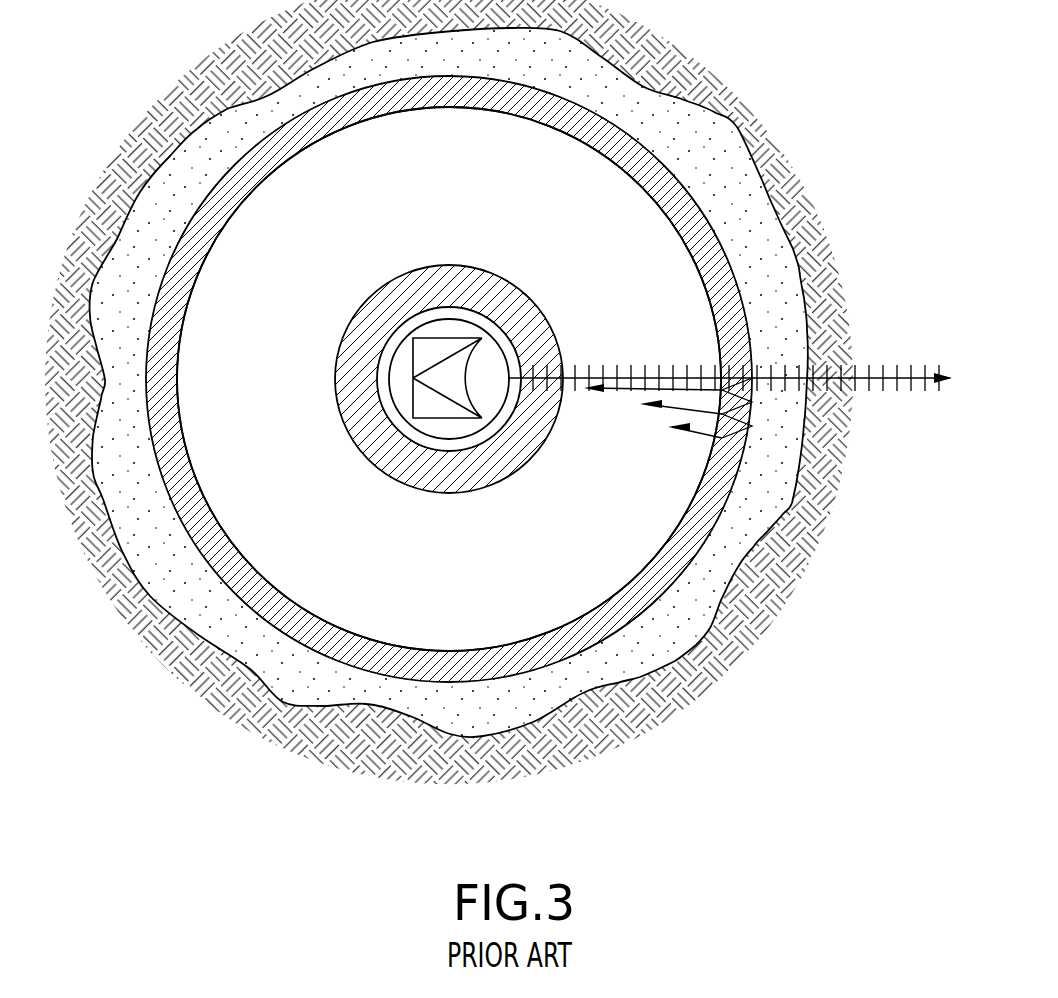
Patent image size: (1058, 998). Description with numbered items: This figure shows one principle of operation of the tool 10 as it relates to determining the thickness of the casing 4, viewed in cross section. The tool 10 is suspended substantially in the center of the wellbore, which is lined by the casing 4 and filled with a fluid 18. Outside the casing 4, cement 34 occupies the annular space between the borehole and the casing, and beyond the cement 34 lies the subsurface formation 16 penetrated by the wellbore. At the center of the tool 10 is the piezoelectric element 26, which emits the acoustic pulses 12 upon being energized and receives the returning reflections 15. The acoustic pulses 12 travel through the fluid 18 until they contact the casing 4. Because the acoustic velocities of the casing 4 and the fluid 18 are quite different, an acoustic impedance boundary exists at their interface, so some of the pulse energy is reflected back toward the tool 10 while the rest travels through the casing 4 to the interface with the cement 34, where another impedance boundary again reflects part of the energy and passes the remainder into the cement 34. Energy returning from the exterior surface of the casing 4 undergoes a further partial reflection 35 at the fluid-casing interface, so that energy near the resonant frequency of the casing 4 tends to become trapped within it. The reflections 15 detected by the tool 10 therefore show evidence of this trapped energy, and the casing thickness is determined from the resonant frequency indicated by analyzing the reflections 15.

The casing 4 is at (720, 285).
The tool 10 is at (456, 258).
The acoustic pulses 12 is at (645, 369).
The reflections 15 is at (645, 405).
The subsurface formation 16 is at (863, 639).
The fluid 18 is at (463, 577).
The piezoelectric element 26 is at (430, 348).
The cement 34 is at (787, 326).
The partial reflection 35 is at (713, 432).